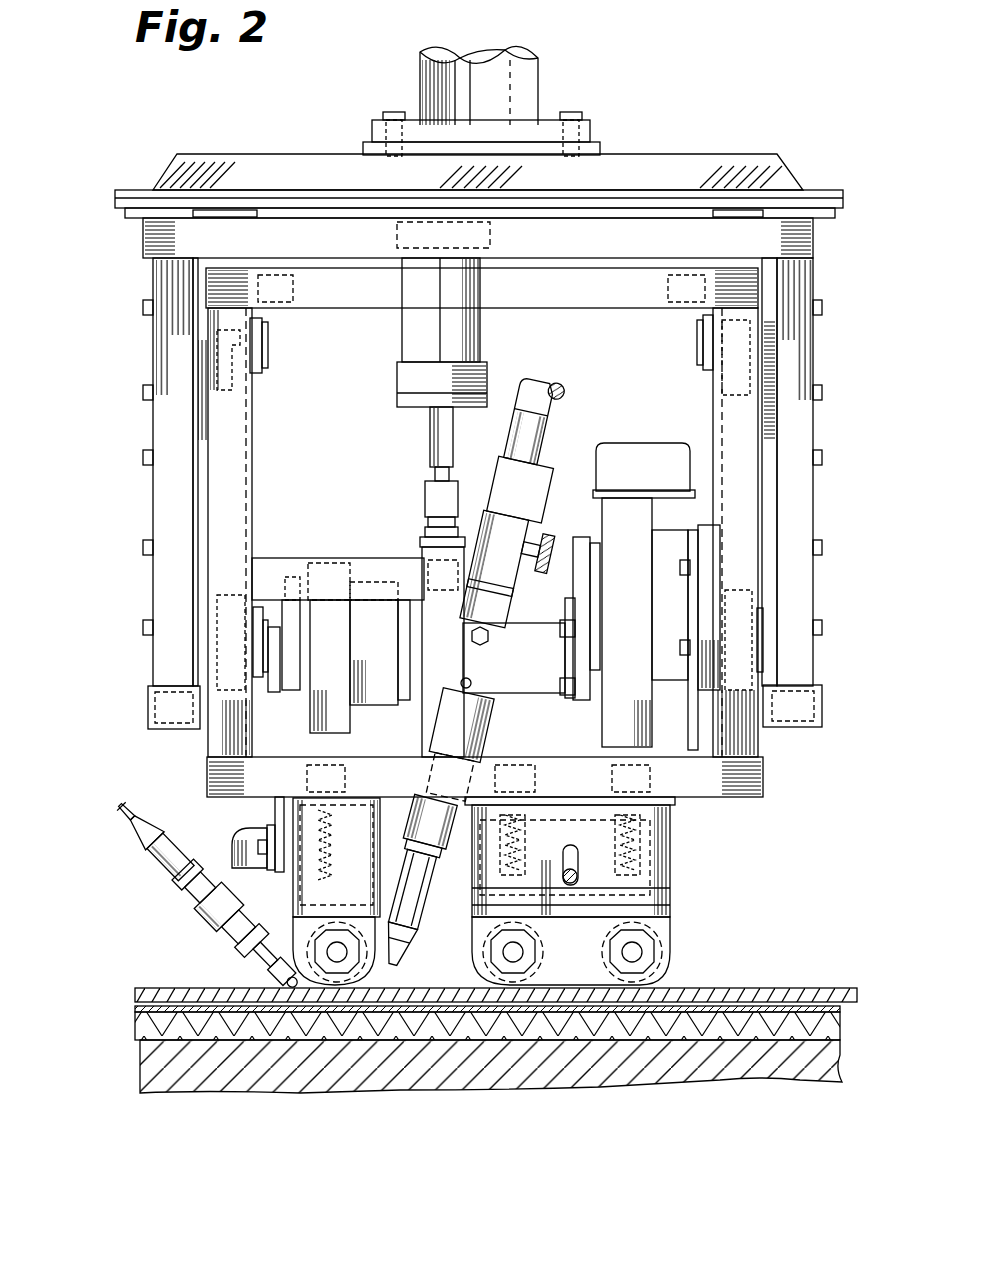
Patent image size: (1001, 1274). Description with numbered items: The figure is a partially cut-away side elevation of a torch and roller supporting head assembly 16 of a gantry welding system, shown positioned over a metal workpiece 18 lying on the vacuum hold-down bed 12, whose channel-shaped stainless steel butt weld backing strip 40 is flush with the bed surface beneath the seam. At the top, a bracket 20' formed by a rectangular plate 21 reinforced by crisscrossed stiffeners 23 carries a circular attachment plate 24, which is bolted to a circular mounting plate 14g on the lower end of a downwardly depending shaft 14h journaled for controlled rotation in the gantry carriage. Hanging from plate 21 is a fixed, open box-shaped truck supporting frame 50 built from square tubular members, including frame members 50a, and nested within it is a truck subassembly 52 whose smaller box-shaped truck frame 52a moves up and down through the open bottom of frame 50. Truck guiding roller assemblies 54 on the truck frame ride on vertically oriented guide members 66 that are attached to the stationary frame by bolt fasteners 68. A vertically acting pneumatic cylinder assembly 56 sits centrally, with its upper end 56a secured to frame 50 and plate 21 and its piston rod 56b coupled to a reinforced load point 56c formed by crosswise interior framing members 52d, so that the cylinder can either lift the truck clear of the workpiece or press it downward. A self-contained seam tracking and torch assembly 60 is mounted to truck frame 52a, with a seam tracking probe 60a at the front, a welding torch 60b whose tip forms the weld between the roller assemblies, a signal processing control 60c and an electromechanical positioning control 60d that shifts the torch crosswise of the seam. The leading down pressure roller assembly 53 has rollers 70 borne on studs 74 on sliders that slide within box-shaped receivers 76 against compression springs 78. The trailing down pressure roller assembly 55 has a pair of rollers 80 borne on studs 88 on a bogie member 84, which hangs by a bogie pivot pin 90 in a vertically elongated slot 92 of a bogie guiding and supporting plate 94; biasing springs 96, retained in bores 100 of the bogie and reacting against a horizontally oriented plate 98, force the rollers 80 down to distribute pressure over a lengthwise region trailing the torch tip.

The vacuum hold-down bed 12 is at (860, 1070).
The circular mounting plate 14g is at (588, 125).
The downwardly depending shaft 14h is at (540, 80).
The welding head assembly 16 is at (140, 297).
The workpiece 18 is at (160, 988).
The bracket 20' is at (477, 128).
The rectangular plate 21 is at (133, 195).
The crisscrossed stiffeners 23 is at (690, 165).
The circular attachment plate 24 is at (603, 150).
The butt weld backing strip 40 is at (178, 1008).
The truck supporting frame 50 is at (168, 413).
The frame members 50a is at (592, 305).
The truck subassembly 52 is at (678, 822).
The truck frame 52a is at (350, 300).
The interior framing members 52d is at (358, 558).
The leading down pressure roller assembly 53 is at (285, 922).
The truck guiding roller assemblies 54 is at (265, 377).
The trailing down pressure roller assembly 55 is at (684, 932).
The pneumatic cylinder assembly 56 is at (490, 370).
The upper end of cylinder assembly 56a is at (492, 246).
The piston rod 56b is at (430, 452).
The load point 56c is at (462, 538).
The seam tracking torch unit and welding torch assembly 60 is at (606, 436).
The seam tracking probe 60a is at (182, 878).
The welding torch 60b is at (440, 860).
The signal processing control 60c is at (372, 695).
The electromechanical positioning control 60d is at (600, 708).
The guide members 66 is at (768, 442).
The bolt fasteners 68 is at (822, 315).
The rollers 70 is at (338, 985).
The studs 74 is at (330, 952).
The receivers 76 is at (380, 825).
The compression springs 78 is at (368, 846).
The rollers 80 is at (330, 878).
The bogie member 84 is at (458, 925).
The studs 88 is at (628, 952).
The bogie pivot pin 90 is at (580, 885).
The vertically elongated slot 92 is at (579, 865).
The bogie guiding and supporting plate 94 is at (656, 848).
The biasing springs 96 is at (520, 862).
The horizontally oriented plate 98 is at (676, 810).
The bores 100 is at (505, 850).